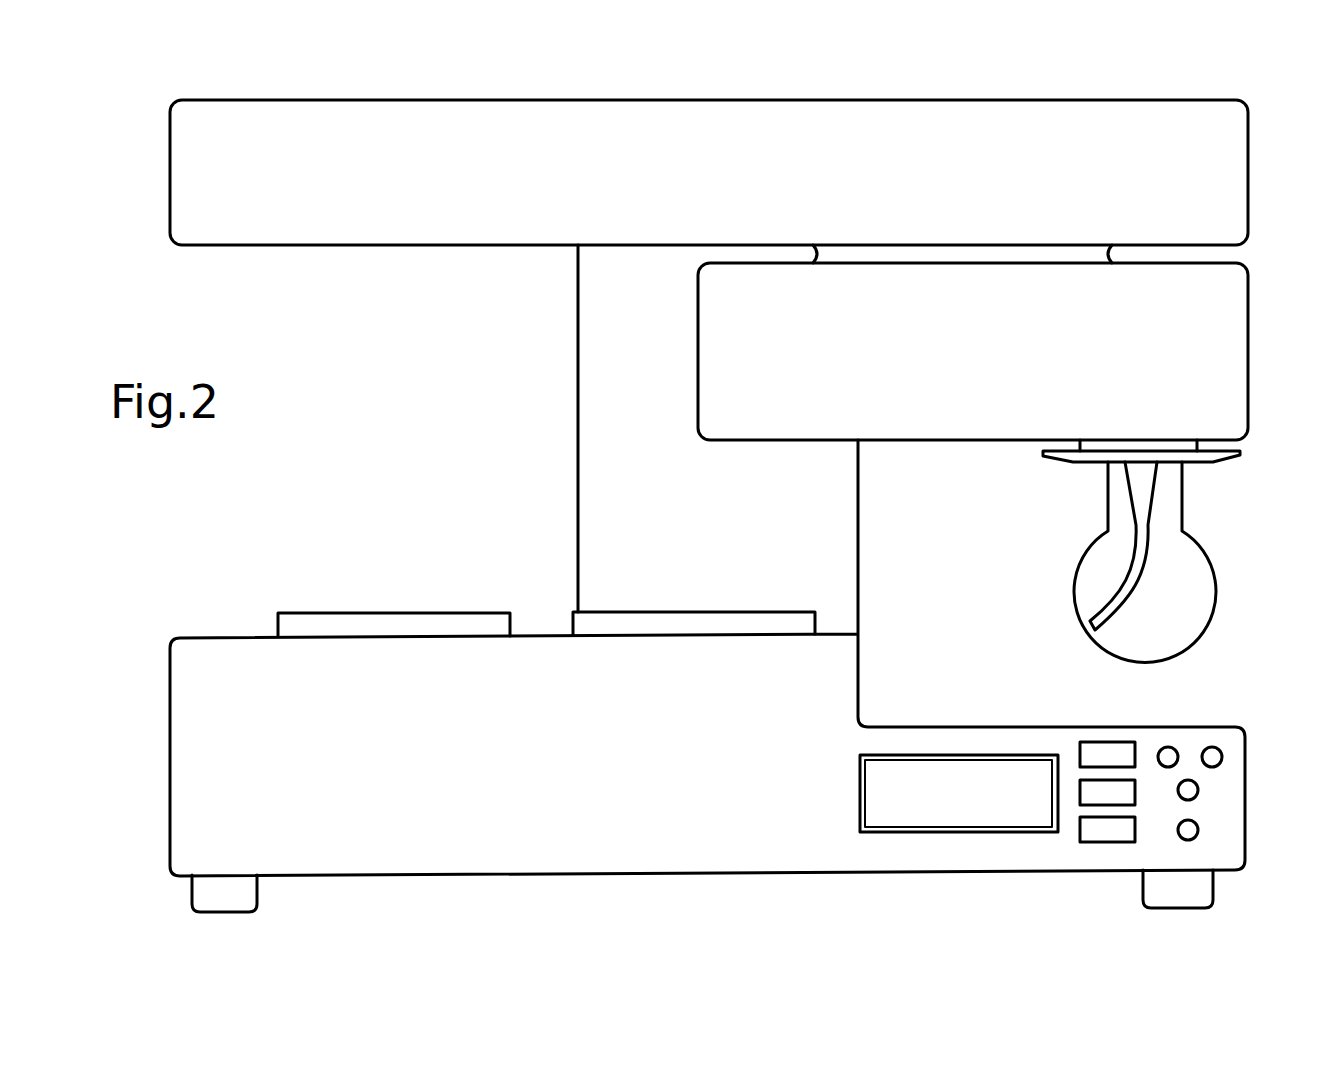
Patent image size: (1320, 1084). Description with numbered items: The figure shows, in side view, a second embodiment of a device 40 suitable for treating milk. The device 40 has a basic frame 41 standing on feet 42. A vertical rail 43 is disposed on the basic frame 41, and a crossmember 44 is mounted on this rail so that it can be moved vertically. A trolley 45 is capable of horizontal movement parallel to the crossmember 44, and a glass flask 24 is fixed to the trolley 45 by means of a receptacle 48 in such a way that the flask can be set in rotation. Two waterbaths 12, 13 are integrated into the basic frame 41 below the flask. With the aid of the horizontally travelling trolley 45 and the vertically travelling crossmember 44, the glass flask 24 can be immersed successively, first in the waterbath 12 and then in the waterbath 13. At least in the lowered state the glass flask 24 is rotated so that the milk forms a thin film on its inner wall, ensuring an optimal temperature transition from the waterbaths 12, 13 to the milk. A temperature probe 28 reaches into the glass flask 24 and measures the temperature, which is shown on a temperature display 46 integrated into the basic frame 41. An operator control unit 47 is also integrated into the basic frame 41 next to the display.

The device 40 is at (310, 430).
The basic frame 41 is at (197, 772).
The feet 42 is at (237, 892).
The vertical rail 43 is at (612, 514).
The crossmember 44 is at (215, 222).
The trolley 45 is at (1223, 380).
The temperature display 46 is at (942, 783).
The operator control unit 47 is at (1152, 778).
The receptacle 48 is at (1043, 452).
The glass flask 24 is at (1175, 562).
The temperature probe 28 is at (1107, 603).
The waterbath 12 is at (355, 624).
The waterbath 13 is at (722, 622).